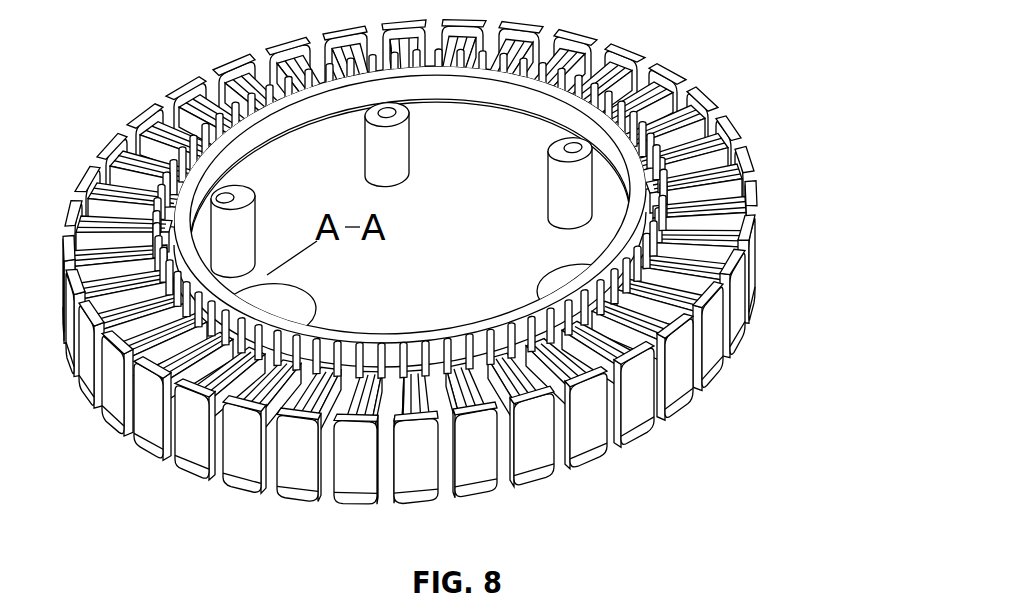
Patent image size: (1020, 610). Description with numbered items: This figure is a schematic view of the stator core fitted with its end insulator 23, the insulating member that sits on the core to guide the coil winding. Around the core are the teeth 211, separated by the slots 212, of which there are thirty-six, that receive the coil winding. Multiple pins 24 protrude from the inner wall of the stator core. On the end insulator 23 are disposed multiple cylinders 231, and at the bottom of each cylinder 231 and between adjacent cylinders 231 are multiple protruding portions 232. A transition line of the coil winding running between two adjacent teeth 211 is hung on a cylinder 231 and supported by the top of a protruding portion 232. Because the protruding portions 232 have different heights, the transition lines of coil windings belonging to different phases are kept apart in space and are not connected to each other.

The pins 24 is at (674, 91).
The end insulator 23 is at (457, 290).
The teeth 211 is at (472, 462).
The slots 212 is at (553, 425).
The cylinders 231 is at (566, 300).
The protruding portions 232 is at (503, 351).